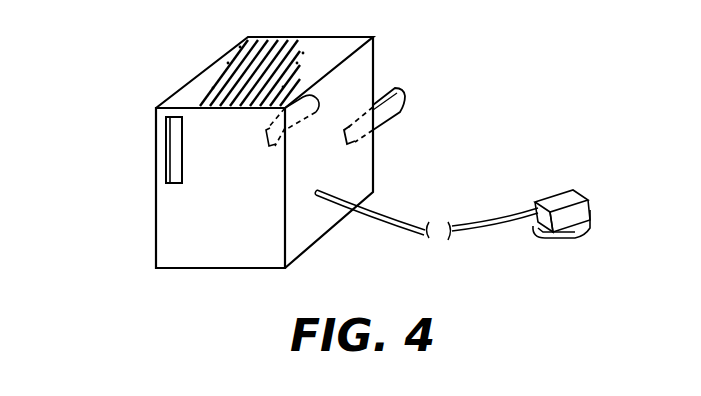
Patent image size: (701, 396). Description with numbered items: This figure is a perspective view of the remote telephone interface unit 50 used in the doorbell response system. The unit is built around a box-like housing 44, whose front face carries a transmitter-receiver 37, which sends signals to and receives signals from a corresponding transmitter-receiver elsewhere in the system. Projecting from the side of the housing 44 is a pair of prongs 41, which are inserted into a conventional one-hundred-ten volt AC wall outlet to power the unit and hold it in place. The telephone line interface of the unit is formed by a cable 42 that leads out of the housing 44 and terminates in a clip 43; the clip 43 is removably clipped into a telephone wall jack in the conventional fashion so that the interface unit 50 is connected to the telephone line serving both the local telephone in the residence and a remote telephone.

The remote telephone interface unit 50 is at (317, 184).
The housing 44 is at (213, 268).
The transmitter-receiver 37 is at (182, 170).
The pair of prongs 41 is at (400, 92).
The cable 42 is at (410, 218).
The clip 43 is at (559, 200).